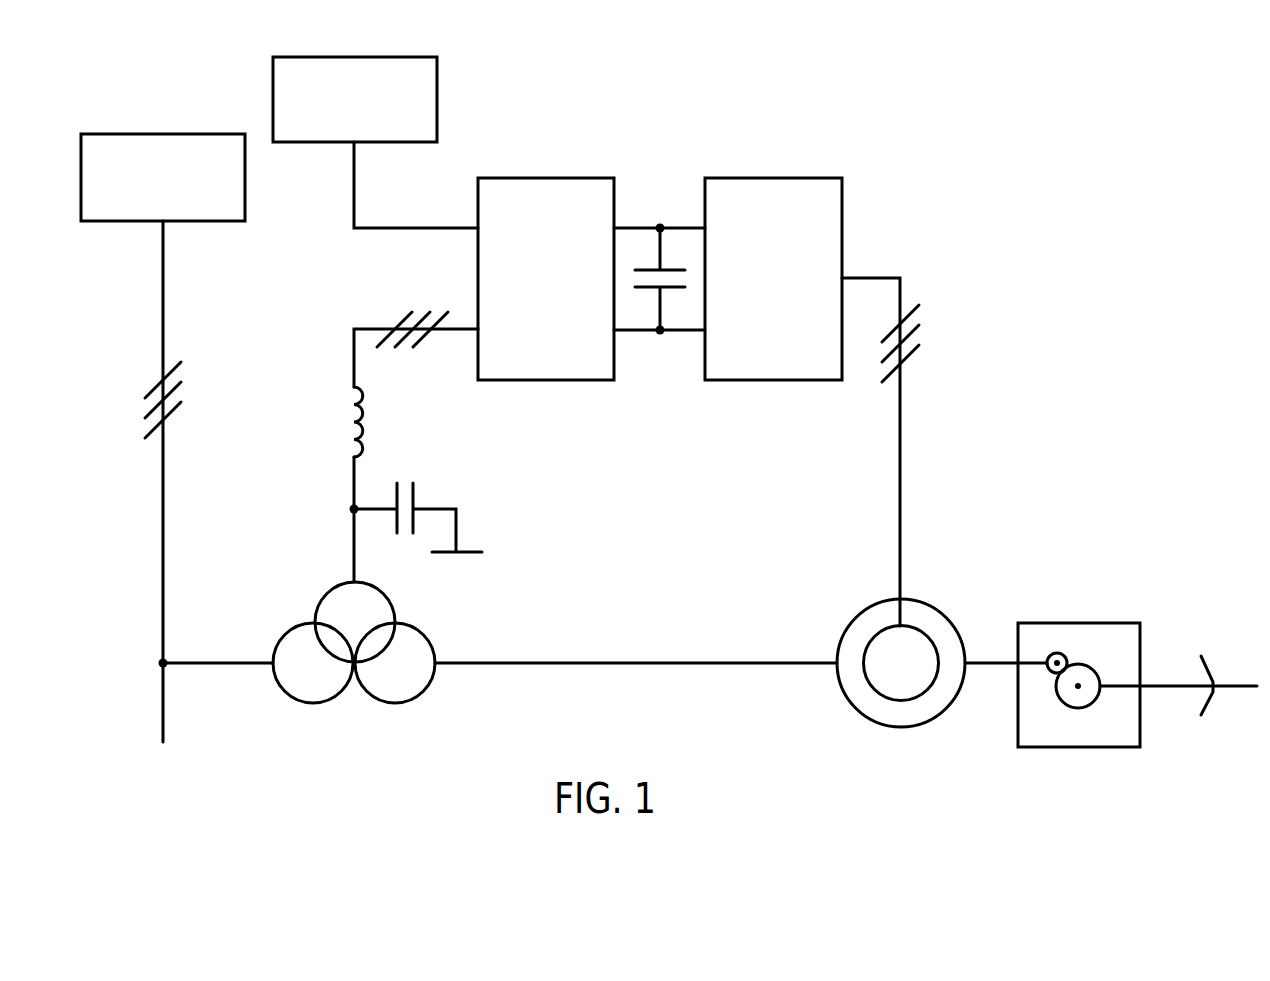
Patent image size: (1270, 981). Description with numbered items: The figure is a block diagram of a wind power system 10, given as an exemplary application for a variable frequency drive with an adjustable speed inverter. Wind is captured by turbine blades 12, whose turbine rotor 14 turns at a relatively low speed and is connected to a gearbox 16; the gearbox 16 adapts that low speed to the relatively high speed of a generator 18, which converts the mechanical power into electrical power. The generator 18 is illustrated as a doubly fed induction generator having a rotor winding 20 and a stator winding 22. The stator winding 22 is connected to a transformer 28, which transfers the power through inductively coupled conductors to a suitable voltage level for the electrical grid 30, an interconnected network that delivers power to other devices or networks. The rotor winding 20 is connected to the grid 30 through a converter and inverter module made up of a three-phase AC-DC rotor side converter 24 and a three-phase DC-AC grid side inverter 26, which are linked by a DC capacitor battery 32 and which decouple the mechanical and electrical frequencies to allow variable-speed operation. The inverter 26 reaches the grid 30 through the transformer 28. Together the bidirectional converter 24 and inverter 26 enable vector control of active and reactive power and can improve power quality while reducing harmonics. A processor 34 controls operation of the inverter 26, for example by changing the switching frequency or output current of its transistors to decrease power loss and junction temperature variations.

The wind power system 10 is at (913, 165).
The turbine blades 12 is at (1234, 690).
The turbine rotor 14 is at (1168, 681).
The gearbox 16 is at (1080, 623).
The generator 18 is at (898, 655).
The rotor winding 20 is at (935, 684).
The stator winding 22 is at (841, 686).
The rotor side converter 24 is at (775, 177).
The grid side inverter 26 is at (547, 177).
The transformer 28 is at (355, 716).
The electrical grid 30 is at (163, 133).
The DC capacitor battery 32 is at (652, 290).
The processor 34 is at (353, 56).